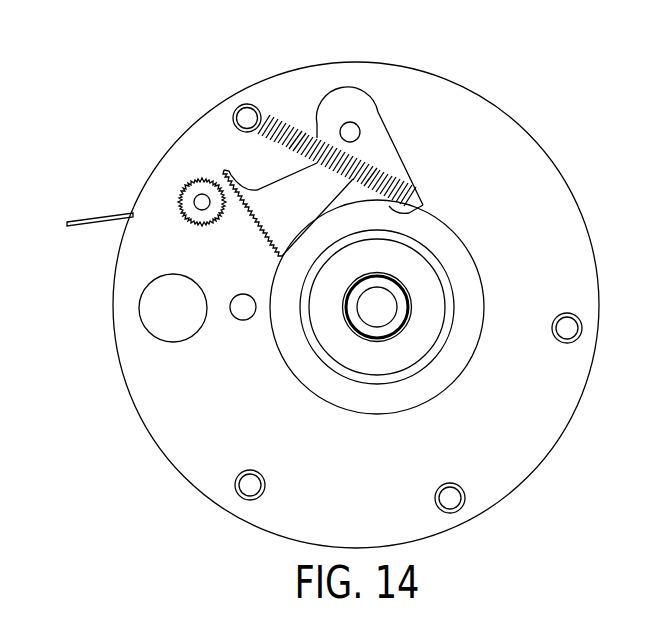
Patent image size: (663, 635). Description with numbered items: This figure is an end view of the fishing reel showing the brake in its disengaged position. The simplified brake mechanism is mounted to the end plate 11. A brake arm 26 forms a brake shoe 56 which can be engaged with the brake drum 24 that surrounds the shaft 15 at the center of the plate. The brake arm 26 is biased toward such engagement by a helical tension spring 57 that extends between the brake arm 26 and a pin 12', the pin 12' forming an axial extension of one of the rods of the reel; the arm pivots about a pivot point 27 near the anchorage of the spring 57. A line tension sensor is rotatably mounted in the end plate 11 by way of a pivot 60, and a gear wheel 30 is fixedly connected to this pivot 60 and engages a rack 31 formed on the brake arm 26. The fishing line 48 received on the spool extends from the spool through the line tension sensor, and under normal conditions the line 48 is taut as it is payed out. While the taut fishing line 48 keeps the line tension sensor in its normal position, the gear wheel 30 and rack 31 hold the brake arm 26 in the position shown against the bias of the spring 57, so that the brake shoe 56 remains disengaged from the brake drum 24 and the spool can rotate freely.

The end plate 11 is at (140, 378).
The pin 12' is at (234, 87).
The shaft 15 is at (382, 318).
The brake drum 24 is at (447, 270).
The brake arm 26 is at (358, 91).
The pivot pin 27 is at (356, 131).
The gear wheel 30 is at (180, 212).
The rack 31 is at (248, 232).
The fishing line 48 is at (93, 216).
The brake shoe 56 is at (414, 212).
The helical tension spring 57 is at (292, 123).
The pivot 60 is at (199, 195).